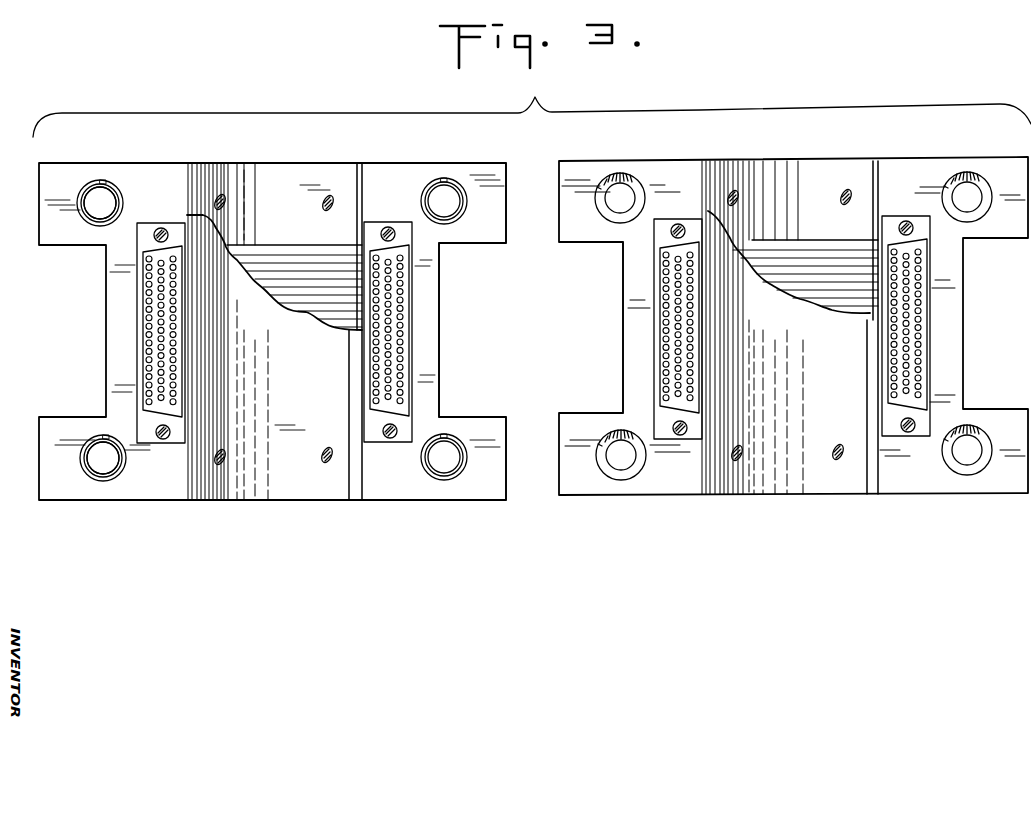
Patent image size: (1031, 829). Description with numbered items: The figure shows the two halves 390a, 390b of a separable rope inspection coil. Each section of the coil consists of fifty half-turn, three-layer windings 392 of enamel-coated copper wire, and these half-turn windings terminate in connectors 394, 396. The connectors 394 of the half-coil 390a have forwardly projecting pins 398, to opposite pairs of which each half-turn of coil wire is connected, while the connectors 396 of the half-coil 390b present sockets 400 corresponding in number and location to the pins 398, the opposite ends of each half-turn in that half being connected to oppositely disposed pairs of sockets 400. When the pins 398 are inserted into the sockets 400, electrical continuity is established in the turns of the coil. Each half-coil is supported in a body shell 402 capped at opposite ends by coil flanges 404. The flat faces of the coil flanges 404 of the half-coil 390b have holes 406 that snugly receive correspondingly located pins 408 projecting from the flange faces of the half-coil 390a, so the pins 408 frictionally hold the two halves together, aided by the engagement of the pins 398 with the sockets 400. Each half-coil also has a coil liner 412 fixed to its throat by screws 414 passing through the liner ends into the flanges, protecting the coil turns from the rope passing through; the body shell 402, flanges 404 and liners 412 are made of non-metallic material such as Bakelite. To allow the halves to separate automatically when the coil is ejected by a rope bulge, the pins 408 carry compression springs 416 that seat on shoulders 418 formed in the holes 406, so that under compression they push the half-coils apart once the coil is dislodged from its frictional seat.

The half-coil 390a is at (394, 159).
The half-coil 390b is at (831, 159).
The half-turn three layer windings 392 is at (272, 310).
The connectors 394 is at (137, 258).
The connectors 396 is at (918, 335).
The pins 398 is at (150, 298).
The sockets 400 is at (667, 363).
The body shell 402 is at (622, 266).
The coil flanges 404 is at (568, 163).
The holes 406 is at (967, 192).
The pins 408 is at (104, 200).
The coil liner 412 is at (809, 485).
The screws 414 is at (739, 463).
The compression springs 416 is at (91, 182).
The shoulders 418 is at (620, 182).